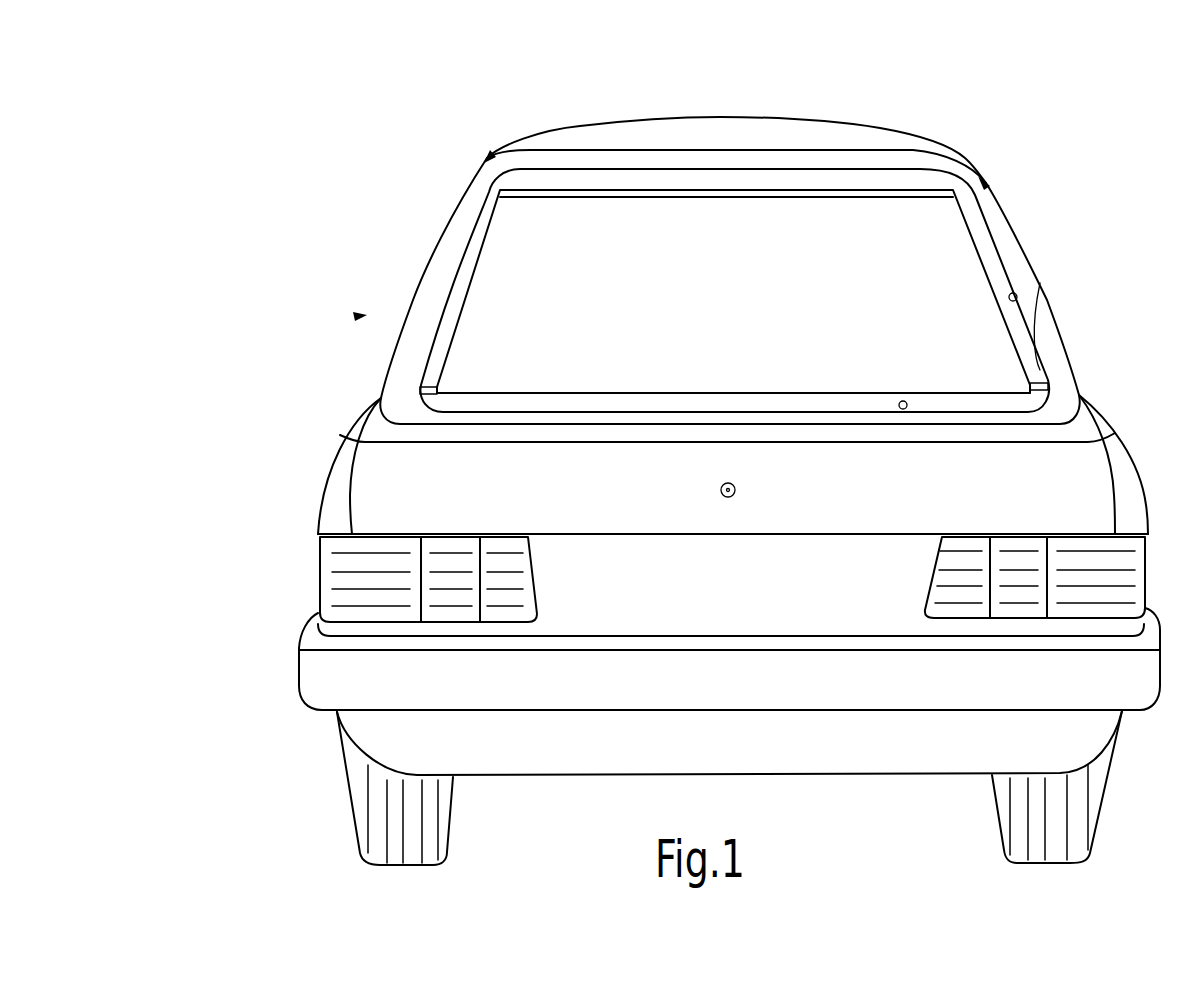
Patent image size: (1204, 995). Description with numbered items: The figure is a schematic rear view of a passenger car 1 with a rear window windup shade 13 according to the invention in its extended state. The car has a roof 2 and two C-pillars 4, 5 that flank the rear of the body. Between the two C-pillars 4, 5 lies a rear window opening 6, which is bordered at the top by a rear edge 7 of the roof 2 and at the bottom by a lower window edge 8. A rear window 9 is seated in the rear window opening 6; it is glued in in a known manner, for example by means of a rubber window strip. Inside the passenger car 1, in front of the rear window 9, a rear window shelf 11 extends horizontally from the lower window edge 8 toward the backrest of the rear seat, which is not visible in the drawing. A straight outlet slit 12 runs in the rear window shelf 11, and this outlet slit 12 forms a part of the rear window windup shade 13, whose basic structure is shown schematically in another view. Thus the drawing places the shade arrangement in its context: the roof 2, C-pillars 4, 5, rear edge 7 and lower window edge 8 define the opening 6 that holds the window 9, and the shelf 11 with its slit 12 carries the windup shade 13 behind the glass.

The passenger car 1 is at (1033, 145).
The roof 2 is at (687, 117).
The C-pillar 4 is at (430, 278).
The C-pillar 5 is at (1013, 257).
The rear window opening 6 is at (1018, 302).
The rear edge of the roof 7 is at (752, 178).
The lower window edge 8 is at (901, 409).
The rear window 9 is at (430, 358).
The rear window shelf 11 is at (602, 402).
The outlet slit 12 is at (1047, 381).
The rear window windup shade 13 is at (355, 316).